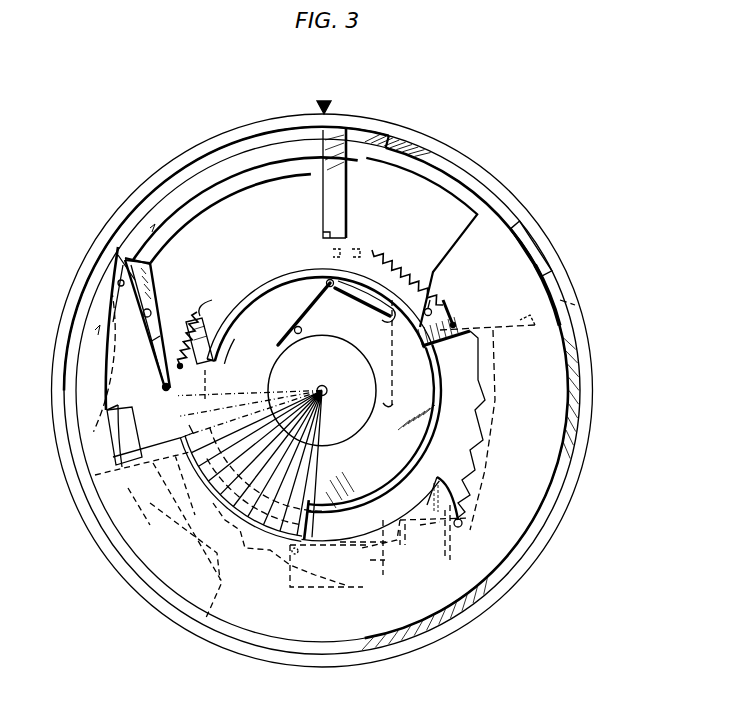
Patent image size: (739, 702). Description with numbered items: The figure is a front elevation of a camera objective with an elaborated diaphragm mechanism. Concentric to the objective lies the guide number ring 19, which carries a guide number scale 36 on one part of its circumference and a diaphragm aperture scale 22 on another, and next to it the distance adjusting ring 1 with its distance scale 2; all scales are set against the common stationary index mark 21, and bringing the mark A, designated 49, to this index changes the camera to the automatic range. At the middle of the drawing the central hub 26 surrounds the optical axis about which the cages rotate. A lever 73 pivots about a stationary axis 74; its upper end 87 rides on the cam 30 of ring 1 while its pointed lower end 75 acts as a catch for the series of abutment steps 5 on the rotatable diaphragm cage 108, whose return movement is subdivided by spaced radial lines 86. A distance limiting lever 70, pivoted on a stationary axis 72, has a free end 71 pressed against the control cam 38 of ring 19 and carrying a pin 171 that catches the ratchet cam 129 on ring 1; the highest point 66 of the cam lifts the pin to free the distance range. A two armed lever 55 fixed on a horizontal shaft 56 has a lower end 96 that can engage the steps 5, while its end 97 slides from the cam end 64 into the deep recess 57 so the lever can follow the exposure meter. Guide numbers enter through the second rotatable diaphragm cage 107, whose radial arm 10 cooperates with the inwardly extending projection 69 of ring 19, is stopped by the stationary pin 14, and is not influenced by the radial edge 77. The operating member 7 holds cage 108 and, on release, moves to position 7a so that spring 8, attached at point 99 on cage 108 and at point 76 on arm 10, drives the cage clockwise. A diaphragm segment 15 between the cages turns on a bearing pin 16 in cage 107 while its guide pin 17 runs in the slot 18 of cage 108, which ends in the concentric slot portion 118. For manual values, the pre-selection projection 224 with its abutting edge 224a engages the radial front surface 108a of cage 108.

The distance adjusting ring 1 is at (412, 157).
The distance scale 2 is at (207, 173).
The series of abutment steps 5 is at (244, 560).
The operating member 7 is at (205, 345).
The released position of operating member 7a is at (355, 248).
The spring 8 is at (397, 249).
The radial arm 10 is at (553, 292).
The stationary pin 14 is at (424, 310).
The diaphragm segment 15 is at (389, 347).
The bearing pin 16 is at (299, 334).
The guide pin 17 is at (330, 281).
The slot 18 is at (306, 322).
The guide number ring 19 is at (366, 120).
The stationary index mark 21 is at (317, 103).
The diaphragm aperture scale 22 is at (495, 182).
The central hub 26 is at (360, 412).
The cam 30 is at (118, 283).
The guide number scale 36 is at (206, 145).
The control cam 38 is at (505, 438).
The mark A 49 is at (385, 128).
The two armed lever 55 is at (150, 509).
The shaft 56 is at (150, 460).
The recess 57 is at (85, 320).
The end of cam 64 is at (108, 410).
The highest point of cam 66 is at (406, 530).
The inwardly extending projection 69 is at (527, 218).
The distance limiting lever 70 is at (369, 550).
The free end of lever 71 is at (450, 540).
The stationary axis 72 is at (291, 588).
The lever 73 is at (152, 290).
The stationary axis 74 is at (152, 312).
The lower end of lever 75 is at (162, 386).
The attachment point 76 is at (453, 335).
The radial edge 77 is at (529, 332).
The spaced radial lines 86 is at (288, 474).
The upper end of lever 87 is at (124, 260).
The lower end of lever 96 is at (170, 538).
The upper end of lever 97 is at (112, 420).
The attachment point 99 is at (182, 368).
The second rotatable diaphragm cage 107 is at (250, 303).
The rotatable diaphragm cage 108 is at (263, 310).
The radial front surface 108a is at (190, 322).
The concentric slot portion 118 is at (365, 296).
The ratchet cam 129 is at (482, 470).
The pin 171 is at (463, 524).
The pre-selection projection 224 is at (323, 192).
The abutting edge 224a is at (323, 233).